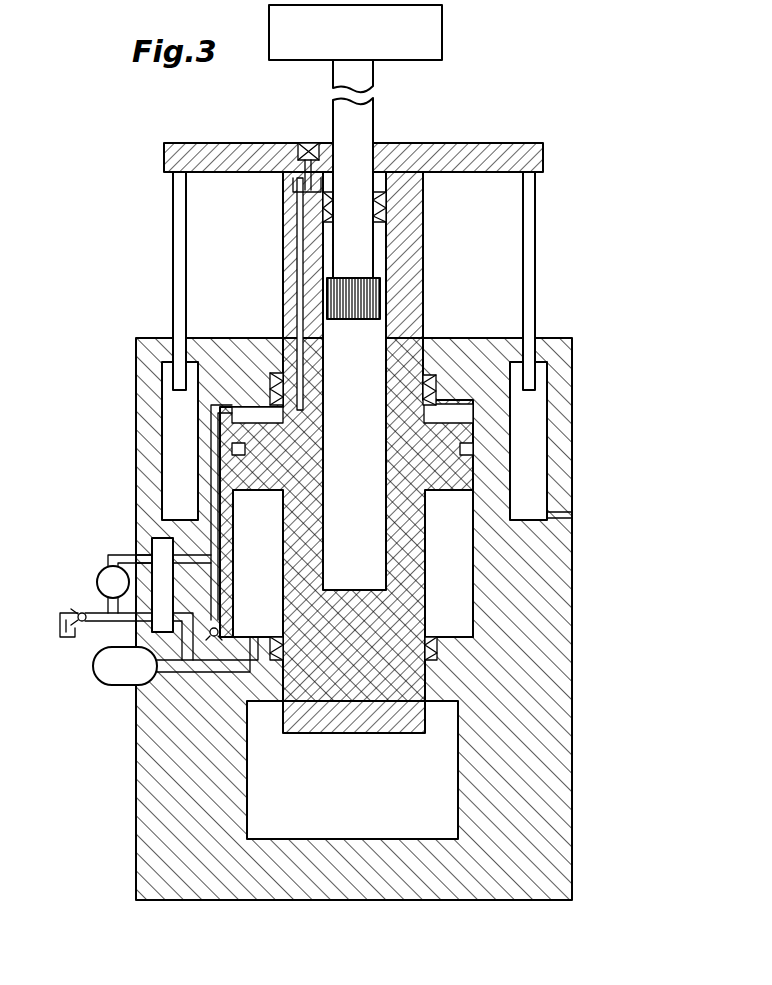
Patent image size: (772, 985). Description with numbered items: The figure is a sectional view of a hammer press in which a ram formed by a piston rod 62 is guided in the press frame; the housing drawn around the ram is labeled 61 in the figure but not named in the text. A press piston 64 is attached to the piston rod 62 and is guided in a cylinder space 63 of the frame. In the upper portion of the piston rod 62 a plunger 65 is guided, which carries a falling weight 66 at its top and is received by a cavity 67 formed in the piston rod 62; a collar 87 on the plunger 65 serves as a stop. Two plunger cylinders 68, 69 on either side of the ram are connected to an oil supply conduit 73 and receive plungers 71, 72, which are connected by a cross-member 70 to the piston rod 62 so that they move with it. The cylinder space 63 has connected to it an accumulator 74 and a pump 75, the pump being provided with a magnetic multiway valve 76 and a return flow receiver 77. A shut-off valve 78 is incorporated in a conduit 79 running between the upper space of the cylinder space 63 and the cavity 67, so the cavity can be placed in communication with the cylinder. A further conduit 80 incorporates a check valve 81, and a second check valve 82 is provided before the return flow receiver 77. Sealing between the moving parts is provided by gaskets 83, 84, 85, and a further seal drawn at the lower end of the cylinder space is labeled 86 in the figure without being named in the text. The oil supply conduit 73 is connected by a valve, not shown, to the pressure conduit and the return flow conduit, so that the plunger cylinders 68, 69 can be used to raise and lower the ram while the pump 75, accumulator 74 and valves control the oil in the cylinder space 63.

The housing 61 is at (545, 735).
The piston rod 62 is at (405, 316).
The cylinder space 63 is at (460, 570).
The press piston 64 is at (442, 470).
The plunger 65 is at (373, 118).
The falling weight 66 is at (442, 40).
The cavity 67 is at (340, 520).
The plunger cylinder 68 is at (175, 428).
The plunger cylinder 69 is at (530, 427).
The cross-member 70 is at (215, 143).
The plunger 71 is at (173, 238).
The plunger 72 is at (528, 240).
The oil supply conduit 73 is at (560, 515).
The accumulator 74 is at (112, 668).
The pump 75 is at (110, 580).
The magnetic multiway valve 76 is at (160, 548).
The return flow receiver 77 is at (62, 640).
The shut-off valve 78 is at (311, 143).
The conduit 79 is at (282, 243).
The conduit 80 is at (215, 478).
The check valve 81 is at (216, 630).
The check valve 82 is at (74, 612).
The gasket 83 is at (384, 207).
The gasket 84 is at (432, 375).
The gasket 85 is at (466, 448).
The lower seal 86 is at (432, 645).
The collar 87 is at (328, 297).